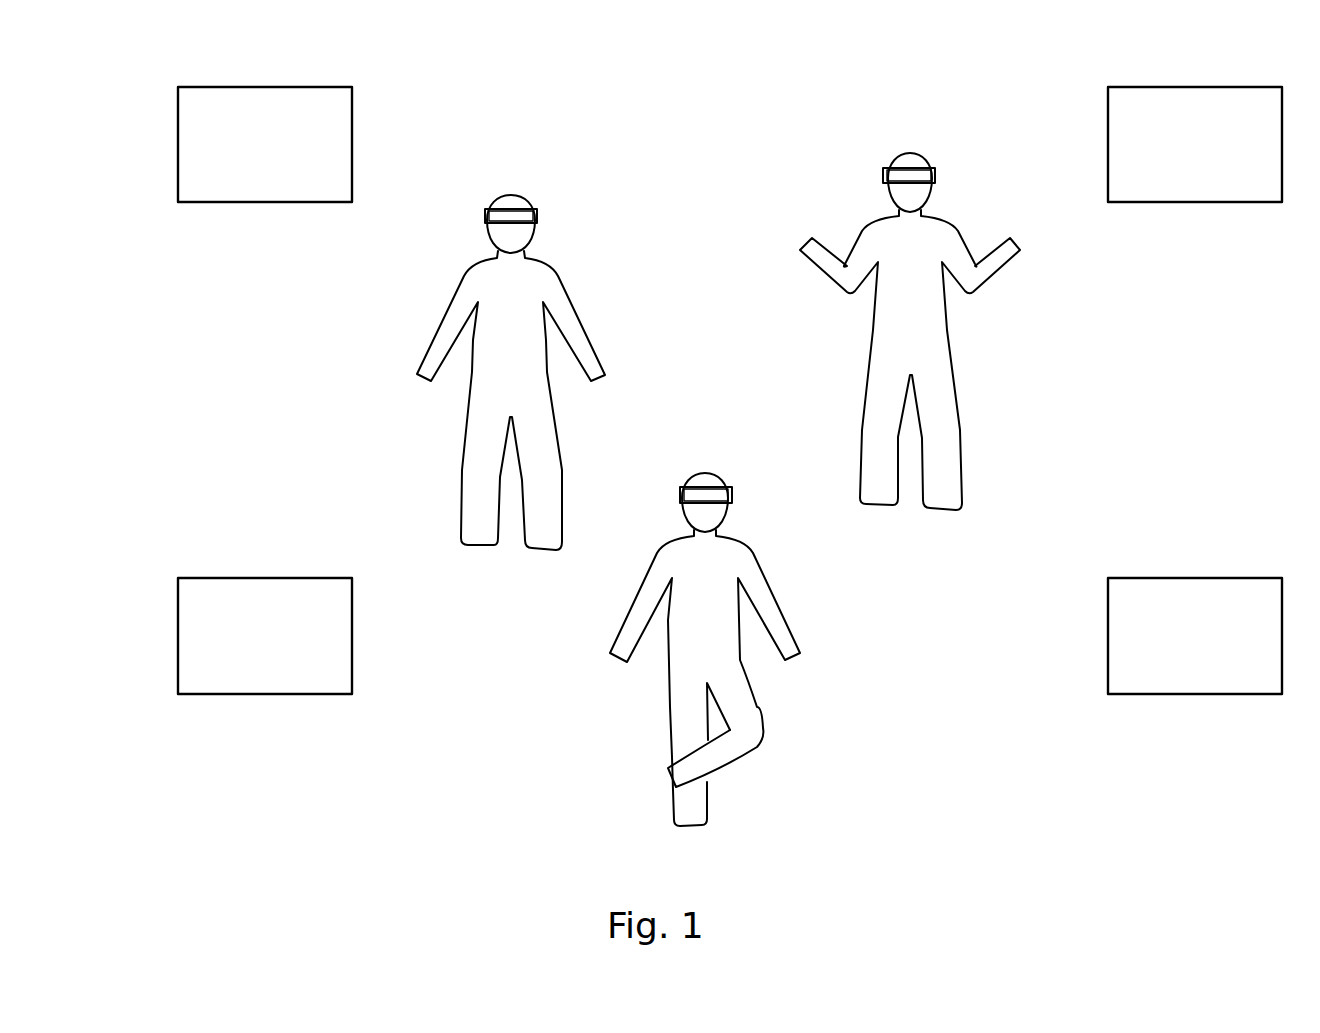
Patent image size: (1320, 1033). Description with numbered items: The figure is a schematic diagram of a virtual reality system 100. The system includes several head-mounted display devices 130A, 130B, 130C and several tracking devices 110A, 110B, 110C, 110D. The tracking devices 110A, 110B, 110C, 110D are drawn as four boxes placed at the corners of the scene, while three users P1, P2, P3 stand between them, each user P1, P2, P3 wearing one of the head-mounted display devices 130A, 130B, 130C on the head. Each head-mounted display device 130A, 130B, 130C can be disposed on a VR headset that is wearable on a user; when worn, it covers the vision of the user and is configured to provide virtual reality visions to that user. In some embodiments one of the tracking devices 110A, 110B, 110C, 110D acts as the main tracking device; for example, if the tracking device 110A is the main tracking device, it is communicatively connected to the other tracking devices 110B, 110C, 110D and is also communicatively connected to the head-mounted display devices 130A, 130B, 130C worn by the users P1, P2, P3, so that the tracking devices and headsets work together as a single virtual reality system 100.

The virtual reality system 100 is at (101, 56).
The tracking device 110A is at (229, 159).
The tracking device 110B is at (229, 651).
The tracking device 110C is at (1160, 159).
The tracking device 110D is at (1160, 651).
The head-mounted display device 130A is at (538, 216).
The head-mounted display device 130B is at (936, 176).
The head-mounted display device 130C is at (733, 494).
The user P1 is at (527, 371).
The user P2 is at (916, 331).
The user P3 is at (723, 649).